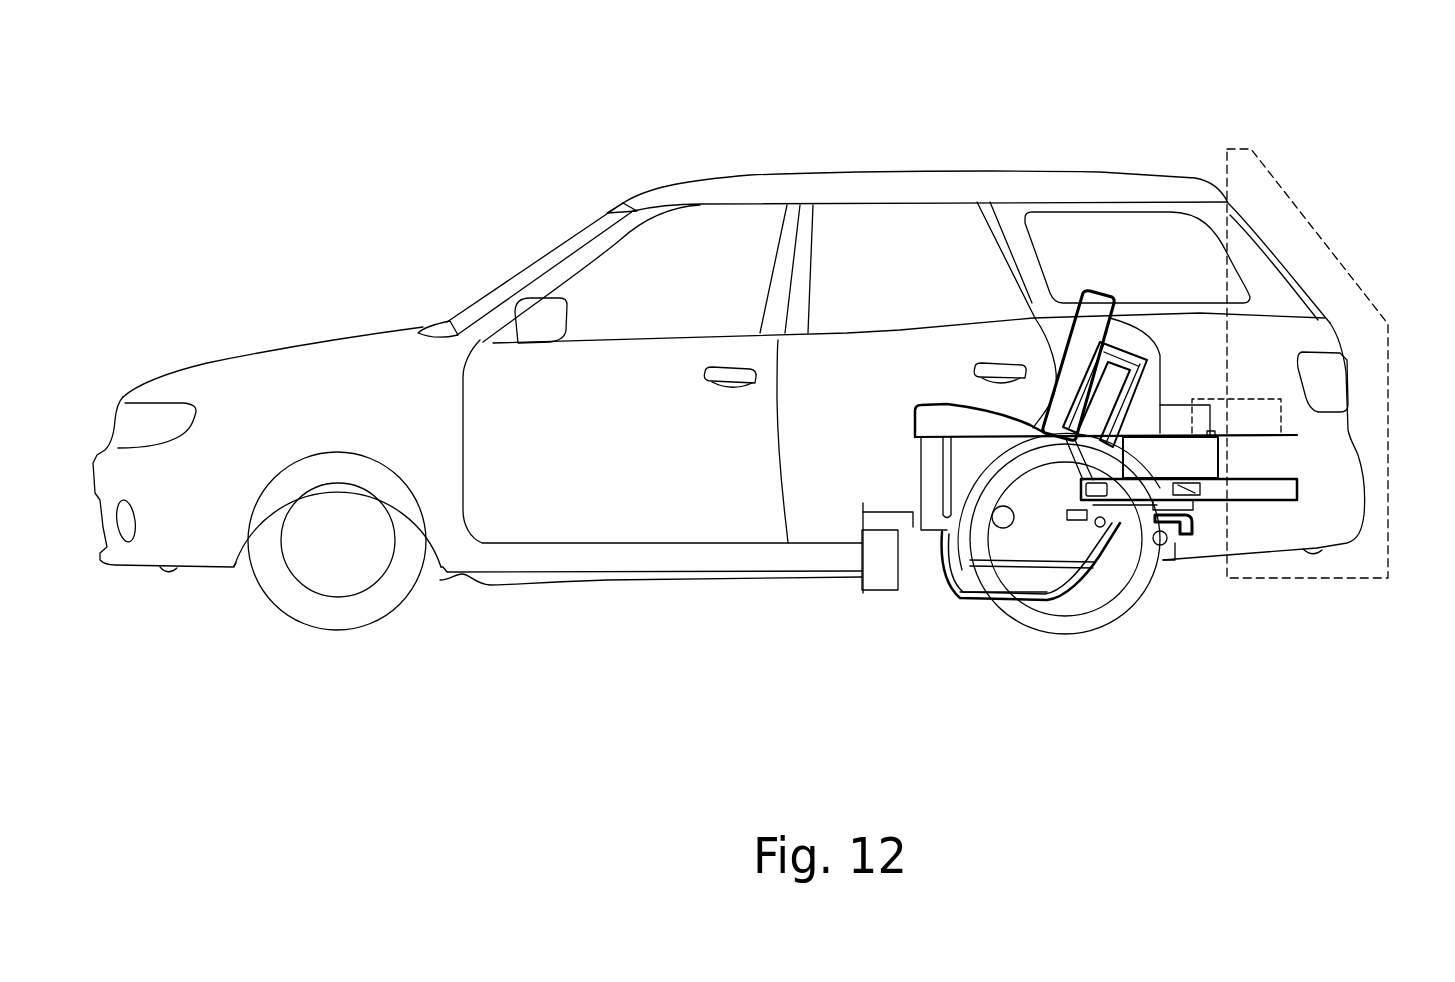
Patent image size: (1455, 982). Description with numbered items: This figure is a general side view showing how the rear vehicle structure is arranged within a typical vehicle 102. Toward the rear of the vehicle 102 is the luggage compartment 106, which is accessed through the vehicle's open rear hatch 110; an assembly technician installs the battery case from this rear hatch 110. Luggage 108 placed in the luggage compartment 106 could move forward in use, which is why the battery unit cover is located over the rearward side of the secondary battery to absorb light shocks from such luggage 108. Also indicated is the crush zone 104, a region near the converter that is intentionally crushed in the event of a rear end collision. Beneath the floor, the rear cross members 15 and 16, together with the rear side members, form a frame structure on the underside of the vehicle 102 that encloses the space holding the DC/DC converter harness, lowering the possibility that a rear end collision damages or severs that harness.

The vehicle 102 is at (572, 213).
The crush zone 104 is at (1283, 581).
The luggage compartment 106 is at (1180, 283).
The luggage 108 is at (1283, 418).
The rear hatch 110 is at (1268, 240).
The rear cross member 15 is at (1157, 433).
The rear cross member 16 is at (1202, 501).